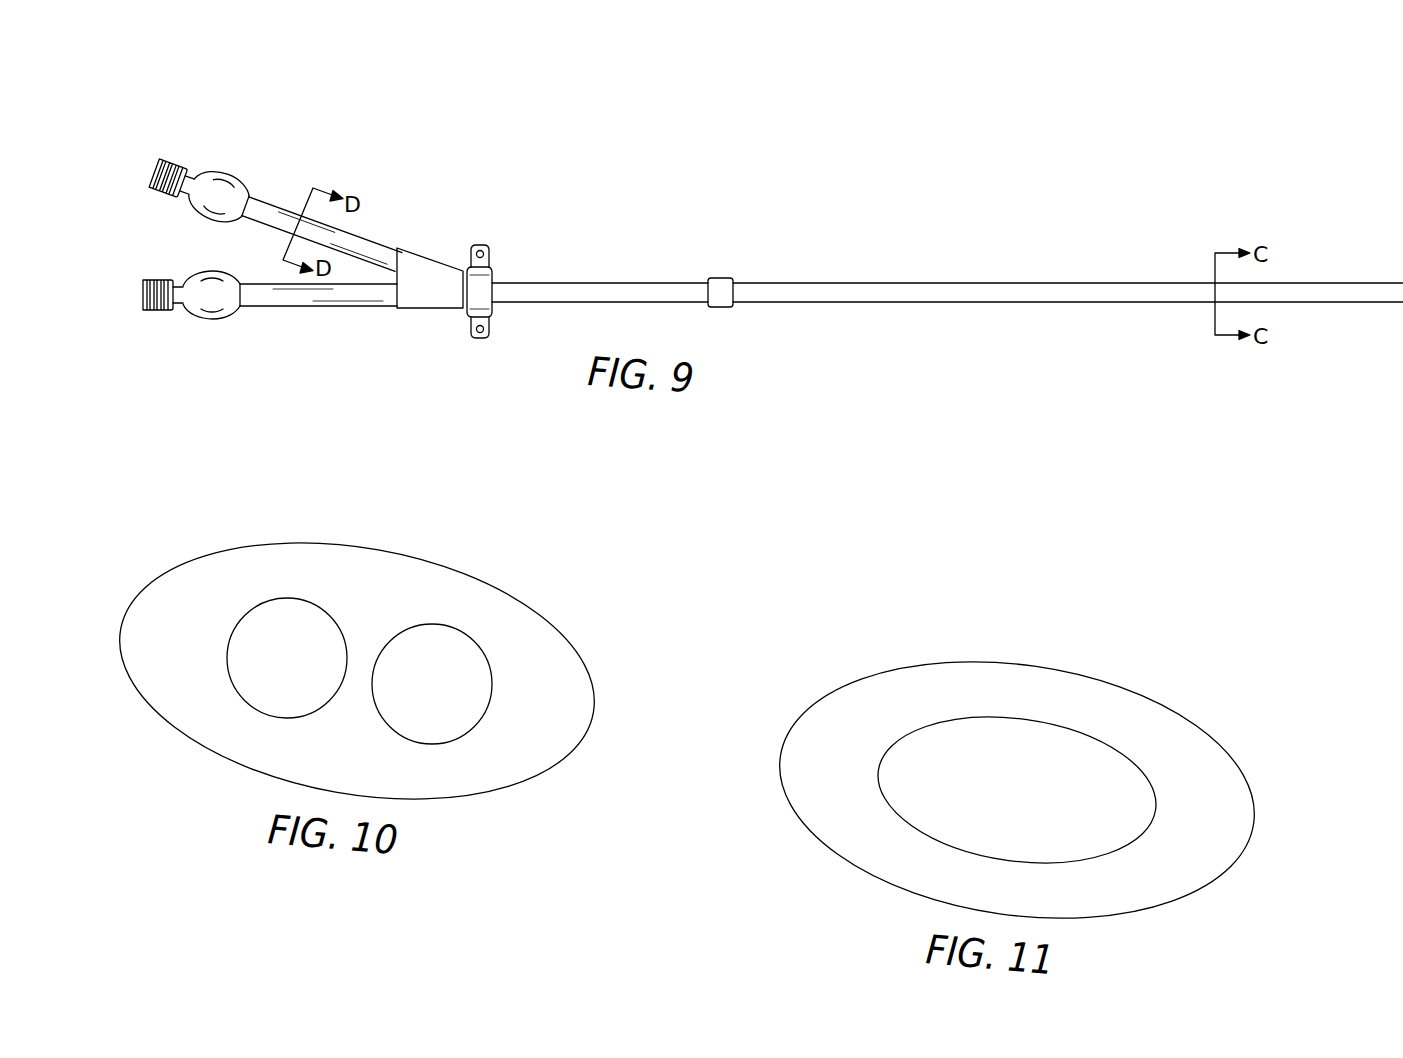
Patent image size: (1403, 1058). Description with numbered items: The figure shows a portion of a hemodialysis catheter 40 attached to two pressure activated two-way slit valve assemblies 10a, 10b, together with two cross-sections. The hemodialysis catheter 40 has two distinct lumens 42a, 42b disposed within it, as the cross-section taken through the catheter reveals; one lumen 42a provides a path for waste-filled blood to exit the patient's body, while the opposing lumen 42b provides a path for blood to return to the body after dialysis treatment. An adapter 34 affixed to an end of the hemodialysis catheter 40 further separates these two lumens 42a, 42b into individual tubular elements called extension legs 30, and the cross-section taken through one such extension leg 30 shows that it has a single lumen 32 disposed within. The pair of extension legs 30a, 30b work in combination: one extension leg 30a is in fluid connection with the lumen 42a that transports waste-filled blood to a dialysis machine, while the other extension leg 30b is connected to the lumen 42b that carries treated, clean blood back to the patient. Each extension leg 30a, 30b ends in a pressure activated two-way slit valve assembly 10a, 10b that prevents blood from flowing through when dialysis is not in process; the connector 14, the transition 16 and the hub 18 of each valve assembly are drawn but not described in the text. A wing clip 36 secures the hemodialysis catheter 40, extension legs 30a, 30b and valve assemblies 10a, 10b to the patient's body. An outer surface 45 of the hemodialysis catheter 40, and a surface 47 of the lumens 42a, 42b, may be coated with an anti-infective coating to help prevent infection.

In FIG. 9, the pressure activated two-way slit valve assembly 10a is at (228, 177).
In FIG. 9, the pressure activated two-way slit valve assembly 10b is at (202, 320).
In FIG. 9, the luer connector 14 is at (174, 166).
In FIG. 9, the strain relief transition 16 is at (246, 190).
In FIG. 9, the hub 18 is at (212, 176).
In FIG. 11, the extension leg 30 is at (944, 663).
In FIG. 9, the extension leg 30a is at (378, 240).
In FIG. 9, the extension leg 30b is at (347, 308).
In FIG. 11, the lumen 32 is at (928, 736).
In FIG. 9, the adapter 34 is at (438, 310).
In FIG. 9, the wing clip 36 is at (488, 256).
In FIG. 9, the hemodialysis catheter 40 is at (662, 290).
In FIG. 10, the hemodialysis catheter 40 is at (572, 628).
In FIG. 10, the lumen 42a is at (232, 670).
In FIG. 10, the lumen 42b is at (489, 702).
In FIG. 10, the outer surface 45 is at (485, 584).
In FIG. 10, the surface 47 is at (318, 605).